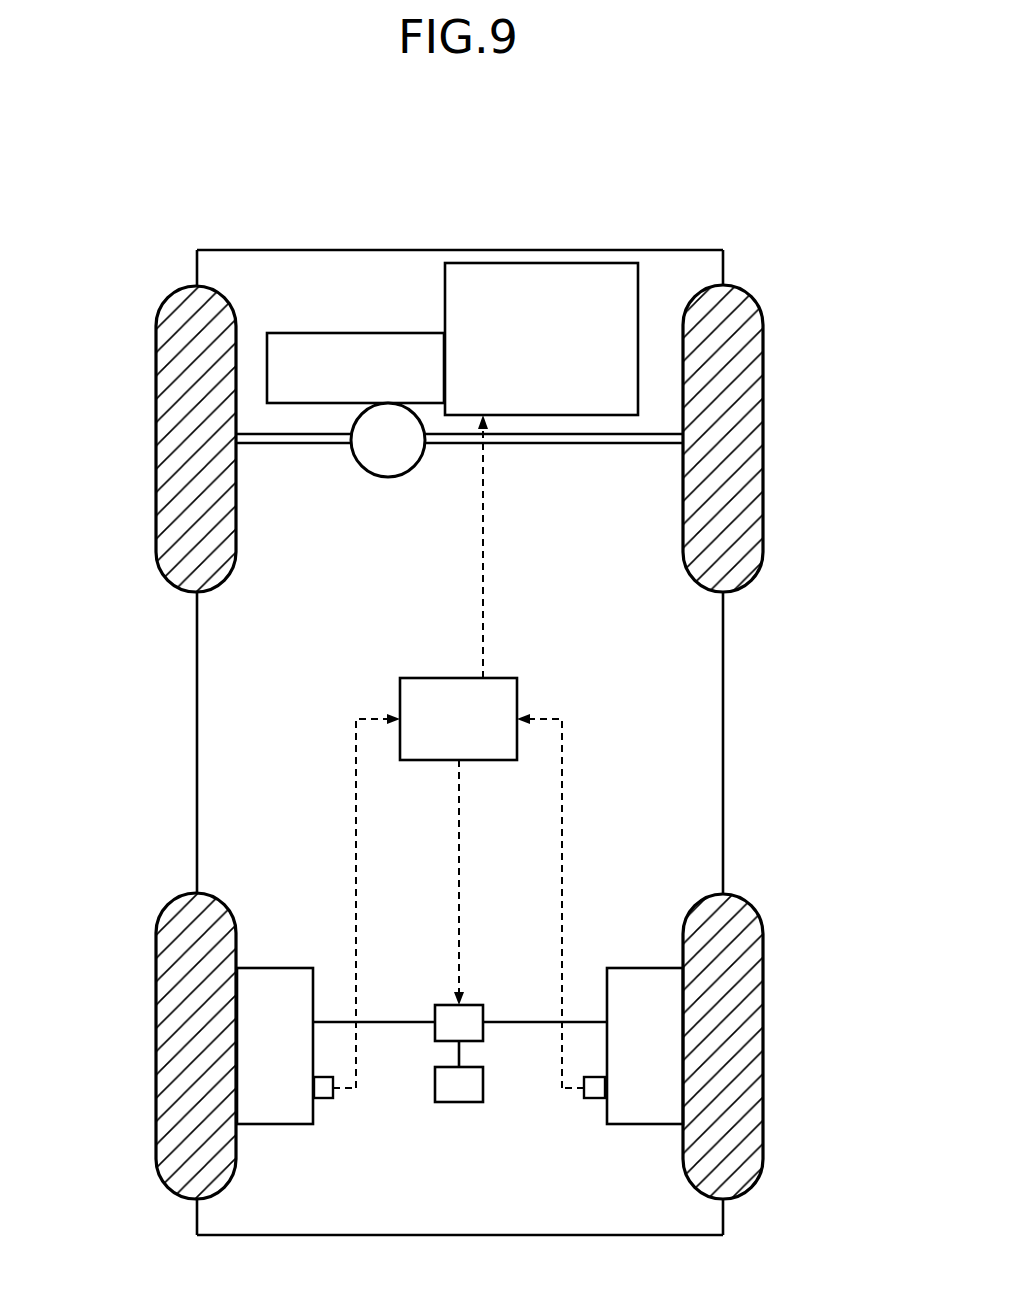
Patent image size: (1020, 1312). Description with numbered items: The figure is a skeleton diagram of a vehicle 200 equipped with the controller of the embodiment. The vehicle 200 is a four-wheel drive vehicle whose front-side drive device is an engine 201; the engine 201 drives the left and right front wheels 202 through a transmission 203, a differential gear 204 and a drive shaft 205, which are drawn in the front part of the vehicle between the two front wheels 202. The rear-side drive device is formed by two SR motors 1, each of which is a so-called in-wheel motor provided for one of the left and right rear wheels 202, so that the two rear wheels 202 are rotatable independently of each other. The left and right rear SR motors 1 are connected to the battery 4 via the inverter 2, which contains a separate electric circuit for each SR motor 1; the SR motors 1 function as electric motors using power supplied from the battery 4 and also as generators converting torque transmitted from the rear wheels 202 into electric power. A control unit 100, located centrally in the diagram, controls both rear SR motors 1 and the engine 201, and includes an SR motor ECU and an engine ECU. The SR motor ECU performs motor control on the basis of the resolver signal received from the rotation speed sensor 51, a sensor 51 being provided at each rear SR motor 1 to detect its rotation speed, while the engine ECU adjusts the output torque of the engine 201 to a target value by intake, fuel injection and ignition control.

The vehicle 200 is at (714, 188).
The engine 201 is at (560, 263).
The wheels 202 is at (156, 440).
The transmission 203 is at (310, 333).
The differential gear 204 is at (389, 478).
The drive shaft 205 is at (295, 447).
The control unit 100 is at (497, 678).
The SR motor 1 is at (258, 968).
The rotation speed sensor 51 is at (322, 1100).
The inverter 2 is at (470, 1005).
The battery 4 is at (457, 1102).